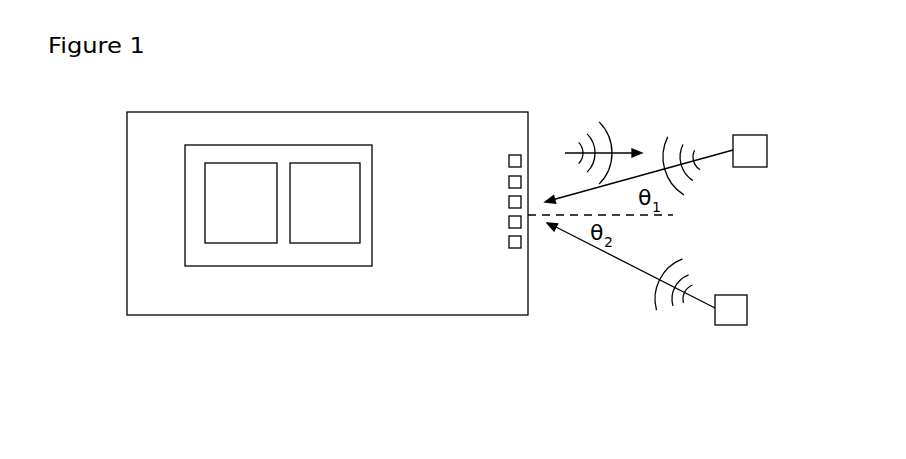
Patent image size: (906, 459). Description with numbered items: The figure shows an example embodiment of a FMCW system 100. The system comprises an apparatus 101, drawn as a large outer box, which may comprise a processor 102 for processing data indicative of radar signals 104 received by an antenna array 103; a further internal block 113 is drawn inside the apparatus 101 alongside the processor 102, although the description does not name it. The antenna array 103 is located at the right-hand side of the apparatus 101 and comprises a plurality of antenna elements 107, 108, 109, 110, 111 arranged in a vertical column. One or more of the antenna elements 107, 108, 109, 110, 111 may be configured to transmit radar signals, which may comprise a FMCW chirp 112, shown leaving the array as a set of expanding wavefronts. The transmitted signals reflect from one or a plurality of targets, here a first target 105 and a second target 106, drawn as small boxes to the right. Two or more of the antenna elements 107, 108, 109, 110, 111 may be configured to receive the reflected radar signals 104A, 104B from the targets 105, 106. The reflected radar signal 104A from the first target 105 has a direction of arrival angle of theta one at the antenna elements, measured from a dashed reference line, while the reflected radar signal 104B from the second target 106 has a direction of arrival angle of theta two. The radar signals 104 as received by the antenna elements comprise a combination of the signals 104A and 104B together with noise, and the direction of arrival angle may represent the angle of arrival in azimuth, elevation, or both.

The FMCW system 100 is at (327, 315).
The apparatus 101 is at (275, 266).
The processor 102 is at (322, 193).
The processor 113 is at (228, 197).
The antenna array 103 is at (513, 262).
The antenna element 107 is at (508, 160).
The antenna element 108 is at (509, 182).
The antenna element 109 is at (509, 201).
The antenna element 110 is at (509, 221).
The antenna element 111 is at (509, 244).
The radar signals 104 is at (670, 357).
The reflected radar signal 104A is at (683, 127).
The reflected radar signal 104B is at (653, 298).
The first target 105 is at (750, 135).
The second target 106 is at (730, 325).
The FMCW chirp 112 is at (597, 125).